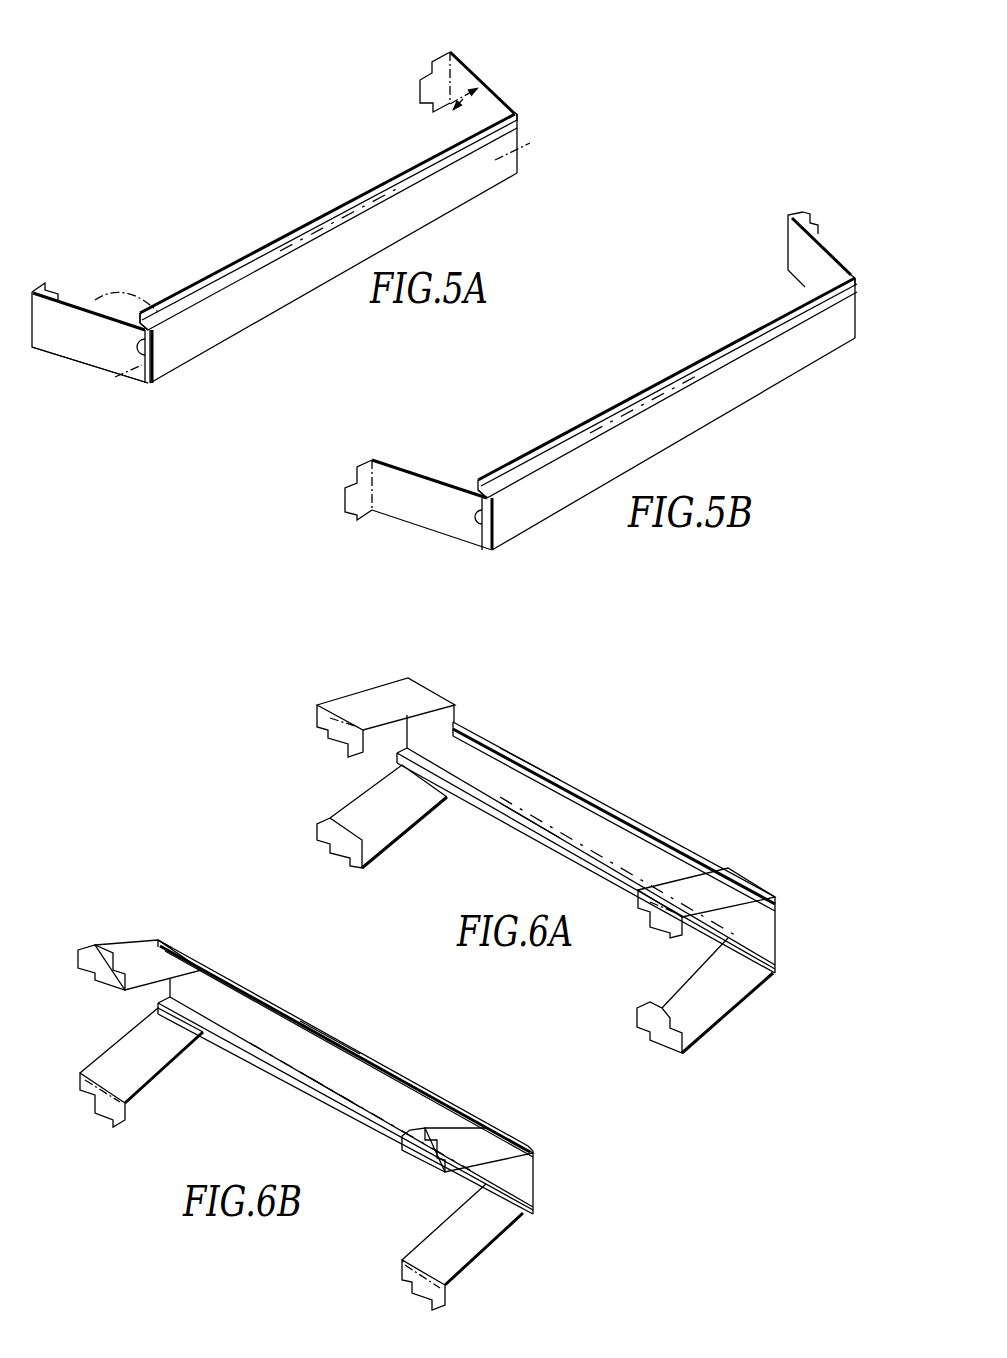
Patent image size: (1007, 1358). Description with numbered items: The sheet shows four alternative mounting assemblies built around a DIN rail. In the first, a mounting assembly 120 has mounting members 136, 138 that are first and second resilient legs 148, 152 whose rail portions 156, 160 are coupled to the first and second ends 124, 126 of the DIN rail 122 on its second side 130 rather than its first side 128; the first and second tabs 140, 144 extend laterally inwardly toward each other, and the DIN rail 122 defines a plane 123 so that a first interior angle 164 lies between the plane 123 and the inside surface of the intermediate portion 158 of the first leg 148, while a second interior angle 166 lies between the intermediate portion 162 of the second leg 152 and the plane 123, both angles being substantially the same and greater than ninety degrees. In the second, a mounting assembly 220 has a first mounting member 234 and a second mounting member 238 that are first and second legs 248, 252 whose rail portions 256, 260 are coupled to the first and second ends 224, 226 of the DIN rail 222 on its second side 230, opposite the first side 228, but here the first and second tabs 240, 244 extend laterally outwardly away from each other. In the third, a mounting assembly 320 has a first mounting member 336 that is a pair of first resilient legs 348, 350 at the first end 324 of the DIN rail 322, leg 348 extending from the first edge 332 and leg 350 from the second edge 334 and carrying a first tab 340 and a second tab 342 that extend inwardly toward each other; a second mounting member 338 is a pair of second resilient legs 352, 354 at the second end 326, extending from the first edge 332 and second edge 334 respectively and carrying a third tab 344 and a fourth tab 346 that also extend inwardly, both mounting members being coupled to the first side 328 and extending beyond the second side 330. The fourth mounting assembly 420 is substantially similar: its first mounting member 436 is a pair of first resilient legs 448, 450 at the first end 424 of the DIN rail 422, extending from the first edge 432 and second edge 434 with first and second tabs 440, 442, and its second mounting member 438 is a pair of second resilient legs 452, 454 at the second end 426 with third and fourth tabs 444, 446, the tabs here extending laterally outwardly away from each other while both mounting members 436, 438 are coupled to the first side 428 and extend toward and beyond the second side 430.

In FIG. 5A, the mounting assembly 120 is at (432, 253).
In FIG. 5A, the DIN rail 122 is at (285, 283).
In FIG. 5A, the plane 123 is at (535, 151).
In FIG. 5A, the first end 124 is at (517, 182).
In FIG. 5A, the second end 126 is at (162, 391).
In FIG. 5A, the first side 128 is at (365, 222).
In FIG. 5A, the second side 130 is at (152, 336).
In FIG. 5A, the mounting member 136 is at (532, 68).
In FIG. 5A, the mounting member 138 is at (82, 372).
In FIG. 5A, the first tab 140 is at (420, 92).
In FIG. 5A, the second tab 144 is at (57, 278).
In FIG. 5A, the first resilient leg 148 is at (487, 78).
In FIG. 5A, the second resilient leg 152 is at (88, 298).
In FIG. 5A, the rail portion 156 is at (520, 117).
In FIG. 5A, the intermediate portion 158 is at (455, 50).
In FIG. 5A, the rail portion 160 is at (147, 386).
In FIG. 5A, the intermediate portion 162 is at (48, 330).
In FIG. 5A, the first interior angle 164 is at (445, 120).
In FIG. 5A, the second interior angle 166 is at (158, 310).
In FIG. 5B, the mounting assembly 220 is at (703, 474).
In FIG. 5B, the DIN rail 222 is at (703, 403).
In FIG. 5B, the first end 224 is at (850, 362).
In FIG. 5B, the second end 226 is at (499, 558).
In FIG. 5B, the flange lip 228 is at (656, 409).
In FIG. 5B, the second side 230 is at (492, 504).
In FIG. 5B, the first end bracket 234 is at (836, 236).
In FIG. 5B, the mounting member 238 is at (420, 539).
In FIG. 5B, the first tab 240 is at (805, 216).
In FIG. 5B, the second tab 244 is at (348, 498).
In FIG. 5B, the first leg 248 is at (819, 237).
In FIG. 5B, the second leg 252 is at (395, 482).
In FIG. 5B, the rail portion 256 is at (857, 277).
In FIG. 5B, the rail portion 260 is at (480, 535).
In FIG. 6A, the mounting assembly 320 is at (440, 856).
In FIG. 6A, the DIN rail 322 is at (565, 841).
In FIG. 6A, the first end 324 is at (461, 699).
In FIG. 6A, the second end 326 is at (781, 890).
In FIG. 6A, the first side 328 is at (680, 860).
In FIG. 6A, the second side 330 is at (486, 772).
In FIG. 6A, the first edge 332 is at (522, 773).
In FIG. 6A, the second edge 334 is at (550, 866).
In FIG. 6A, the first mounting member 336 is at (330, 692).
In FIG. 6A, the second mounting member 338 is at (754, 1001).
In FIG. 6A, the first tab 340 is at (336, 748).
In FIG. 6A, the second tab 342 is at (328, 828).
In FIG. 6A, the third tab 344 is at (648, 927).
In FIG. 6A, the fourth tab 346 is at (640, 1016).
In FIG. 6A, the first resilient leg 348 is at (368, 700).
In FIG. 6A, the first resilient leg 350 is at (398, 852).
In FIG. 6A, the second resilient leg 352 is at (715, 882).
In FIG. 6A, the second resilient leg 354 is at (728, 1020).
In FIG. 6B, the mounting assembly 420 is at (255, 1150).
In FIG. 6B, the DIN rail 422 is at (335, 1093).
In FIG. 6B, the first end 424 is at (223, 949).
In FIG. 6B, the second end 426 is at (506, 1127).
In FIG. 6B, the first side 428 is at (437, 1100).
In FIG. 6B, the second side 430 is at (245, 1003).
In FIG. 6B, the first edge 432 is at (345, 1048).
In FIG. 6B, the second edge 434 is at (258, 1077).
In FIG. 6B, the first mounting member 436 is at (151, 929).
In FIG. 6B, the second mounting member 438 is at (465, 1276).
In FIG. 6B, the first tab 440 is at (85, 946).
In FIG. 6B, the second tab 442 is at (93, 1106).
In FIG. 6B, the third tab 444 is at (420, 1145).
In FIG. 6B, the fourth tab 446 is at (410, 1296).
In FIG. 6B, the first resilient leg 448 is at (115, 945).
In FIG. 6B, the first resilient leg 450 is at (108, 1040).
In FIG. 6B, the second resilient leg 452 is at (470, 1145).
In FIG. 6B, the second resilient leg 454 is at (505, 1235).